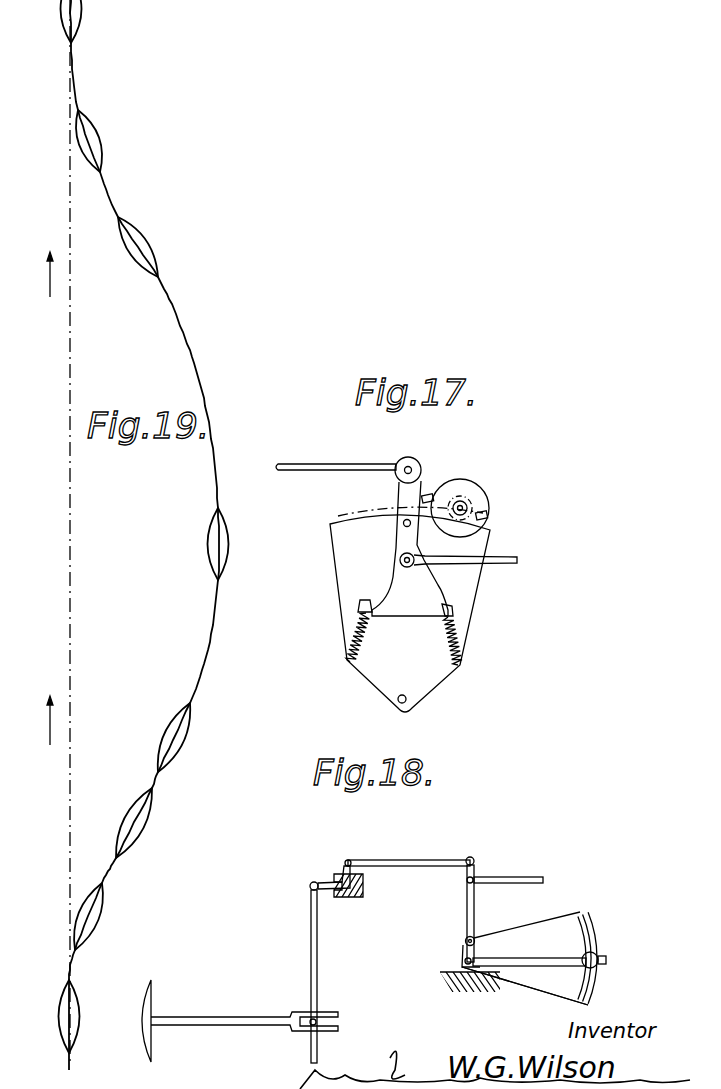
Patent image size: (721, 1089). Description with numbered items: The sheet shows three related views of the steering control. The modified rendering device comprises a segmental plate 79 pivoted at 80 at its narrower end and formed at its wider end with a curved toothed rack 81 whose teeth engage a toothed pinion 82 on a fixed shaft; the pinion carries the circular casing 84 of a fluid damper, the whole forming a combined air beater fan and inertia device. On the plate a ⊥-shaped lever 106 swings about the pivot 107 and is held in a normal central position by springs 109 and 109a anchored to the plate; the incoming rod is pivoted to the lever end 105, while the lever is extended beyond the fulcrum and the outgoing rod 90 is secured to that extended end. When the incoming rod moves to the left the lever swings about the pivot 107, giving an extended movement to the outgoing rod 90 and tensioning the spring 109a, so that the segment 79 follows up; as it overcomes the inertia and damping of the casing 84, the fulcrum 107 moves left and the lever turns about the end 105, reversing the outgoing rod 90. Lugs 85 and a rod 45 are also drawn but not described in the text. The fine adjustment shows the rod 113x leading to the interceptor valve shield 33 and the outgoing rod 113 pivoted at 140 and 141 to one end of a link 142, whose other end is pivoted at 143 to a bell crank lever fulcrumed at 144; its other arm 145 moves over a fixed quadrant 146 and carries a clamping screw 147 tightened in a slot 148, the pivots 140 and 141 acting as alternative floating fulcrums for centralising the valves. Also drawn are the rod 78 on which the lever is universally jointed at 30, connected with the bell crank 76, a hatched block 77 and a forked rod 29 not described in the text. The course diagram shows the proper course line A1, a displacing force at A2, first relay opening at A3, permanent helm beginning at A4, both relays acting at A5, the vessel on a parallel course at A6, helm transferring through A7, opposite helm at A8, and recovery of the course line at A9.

In FIG. 19, the course line A1 is at (48, 500).
In FIG. 19, the deviation position A2 is at (53, 1016).
In FIG. 19, the first relay opening position A3 is at (104, 916).
In FIG. 19, the permanent helm start position A4 is at (120, 823).
In FIG. 19, the dual permanent helm position A5 is at (158, 737).
In FIG. 19, the parallel course position A6 is at (200, 544).
In FIG. 19, the helm transfer position A7 is at (152, 247).
In FIG. 19, the opposite helm position A8 is at (106, 141).
In FIG. 19, the course recovery position A9 is at (55, 21).
In FIG. 17, the outgoing rod 90 is at (338, 467).
In FIG. 17, the toothed pinion 82 is at (460, 498).
In FIG. 17, the circular casing 84 is at (485, 488).
In FIG. 17, the disc stop lugs 85 is at (490, 518).
In FIG. 17, the curved toothed rack 81 is at (354, 517).
In FIG. 17, the pivot 107 is at (403, 525).
In FIG. 17, the lever end 105 is at (399, 560).
In FIG. 17, the ⊥-shaped lever 106 is at (413, 578).
In FIG. 17, the rod 45 is at (517, 553).
In FIG. 17, the segmental plate 79 is at (480, 592).
In FIG. 17, the spring 109 is at (352, 636).
In FIG. 17, the spring 109a is at (456, 628).
In FIG. 17, the pivot 80 is at (402, 695).
In FIG. 18, the rod 113x is at (410, 860).
In FIG. 18, the bell crank 76 is at (330, 881).
In FIG. 18, the pivot 140 is at (475, 860).
In FIG. 18, the outgoing rod 113 is at (518, 880).
In FIG. 18, the pivot 141 is at (467, 881).
In FIG. 18, the link 142 is at (474, 901).
In FIG. 18, the hatched block 77 is at (358, 894).
In FIG. 18, the rod 78 is at (317, 965).
In FIG. 18, the bell crank arm 145 is at (536, 966).
In FIG. 18, the pivot 143 is at (465, 941).
In FIG. 18, the fulcrum 144 is at (460, 959).
In FIG. 18, the slot 148 is at (586, 922).
In FIG. 18, the clamping screw 147 is at (597, 957).
In FIG. 18, the fixed quadrant 146 is at (552, 987).
In FIG. 18, the shield 33 is at (153, 993).
In FIG. 18, the rod with fork 29 is at (233, 1017).
In FIG. 18, the universal joint 30 is at (310, 1028).